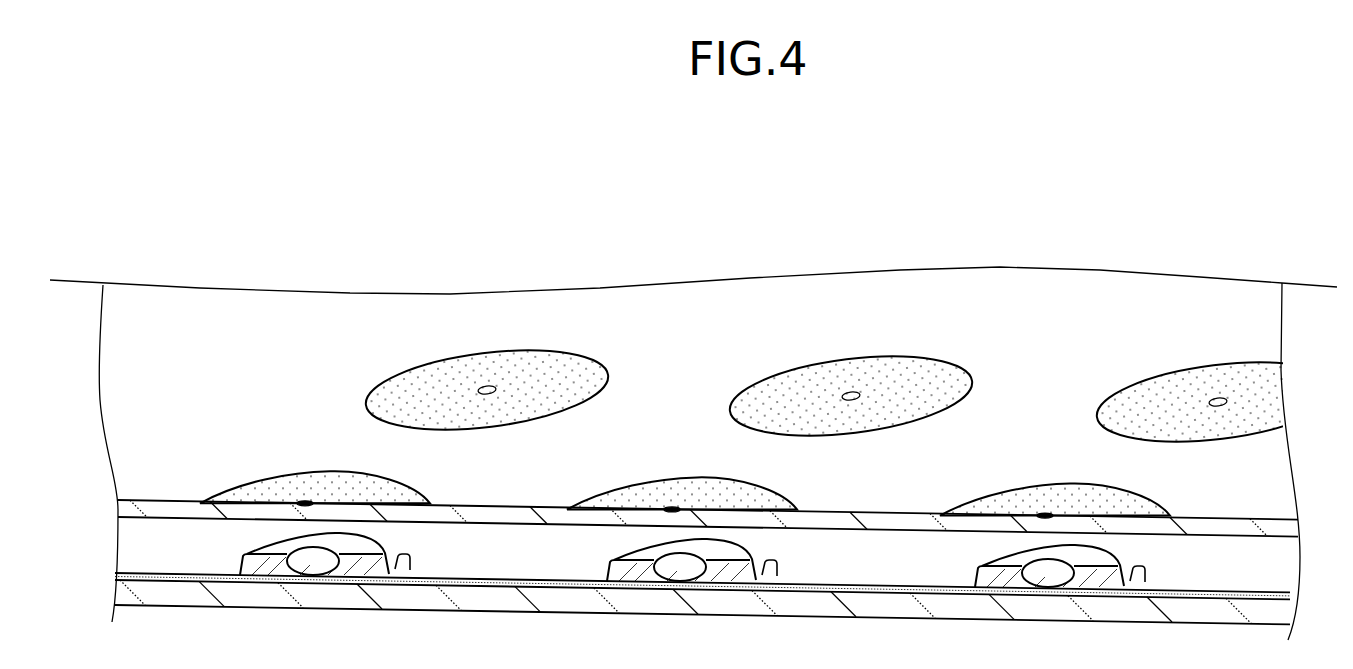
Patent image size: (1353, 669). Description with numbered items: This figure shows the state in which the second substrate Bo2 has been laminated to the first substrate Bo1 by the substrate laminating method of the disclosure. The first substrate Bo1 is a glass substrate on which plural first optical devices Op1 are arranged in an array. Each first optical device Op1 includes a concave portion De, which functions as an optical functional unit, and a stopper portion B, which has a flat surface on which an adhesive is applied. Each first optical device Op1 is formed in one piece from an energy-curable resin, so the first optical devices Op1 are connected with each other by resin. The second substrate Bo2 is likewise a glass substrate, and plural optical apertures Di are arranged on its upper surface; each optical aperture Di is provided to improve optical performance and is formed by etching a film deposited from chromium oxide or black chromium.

The first substrate Bo1 is at (178, 607).
The second substrate Bo2 is at (182, 343).
The optical aperture Di is at (303, 472).
The stopper portion B is at (280, 549).
The concave portion De is at (312, 566).
The first optical device Op1 is at (412, 563).